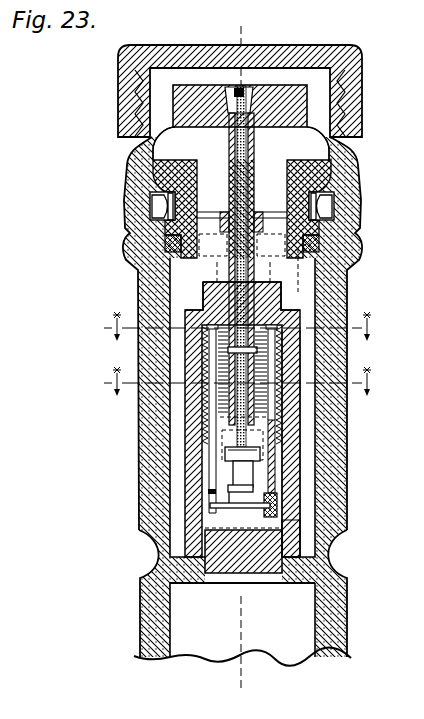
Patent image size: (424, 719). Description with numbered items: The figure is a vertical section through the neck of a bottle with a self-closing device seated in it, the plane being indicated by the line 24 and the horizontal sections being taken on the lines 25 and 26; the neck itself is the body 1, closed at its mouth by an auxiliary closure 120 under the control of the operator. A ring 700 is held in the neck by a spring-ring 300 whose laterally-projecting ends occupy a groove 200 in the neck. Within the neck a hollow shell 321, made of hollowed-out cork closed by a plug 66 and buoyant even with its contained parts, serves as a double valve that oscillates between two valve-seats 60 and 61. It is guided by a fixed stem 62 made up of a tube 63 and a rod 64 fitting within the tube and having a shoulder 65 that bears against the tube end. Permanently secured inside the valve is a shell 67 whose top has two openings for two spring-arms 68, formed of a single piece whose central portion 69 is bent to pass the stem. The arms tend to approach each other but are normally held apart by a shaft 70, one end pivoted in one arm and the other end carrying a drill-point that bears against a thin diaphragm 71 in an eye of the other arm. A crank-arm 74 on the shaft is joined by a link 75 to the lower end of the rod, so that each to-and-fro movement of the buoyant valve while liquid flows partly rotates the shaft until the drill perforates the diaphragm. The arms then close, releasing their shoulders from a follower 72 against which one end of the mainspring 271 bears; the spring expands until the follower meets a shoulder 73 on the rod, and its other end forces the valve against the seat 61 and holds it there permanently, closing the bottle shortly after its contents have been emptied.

The housing body 1 is at (347, 279).
The section line 24 24 is at (239, 356).
The section line 25 25 is at (238, 326).
The section line 26 26 is at (237, 381).
The valve-seat 60 is at (346, 549).
The valve-seat 61 is at (265, 270).
The fixed stem 62 is at (229, 267).
The tube 63 is at (254, 141).
The rod 64 is at (254, 180).
The shoulder 65 is at (258, 349).
The plug 66 is at (243, 550).
The shell 67 is at (292, 518).
The spring-arms 68 is at (271, 456).
The central portion 69 is at (216, 312).
The shaft 70 is at (238, 505).
The diaphragm 71 is at (290, 500).
The follower 72 is at (208, 416).
The shoulder 73 is at (232, 430).
The crank-arm 74 is at (228, 501).
The link 75 is at (240, 470).
The auxiliary closure 120 is at (363, 97).
The groove 200 is at (318, 220).
The mainspring 271 is at (185, 357).
The spring-ring 300 is at (330, 201).
The hollow shell 321 is at (275, 438).
The ring 700 is at (318, 170).